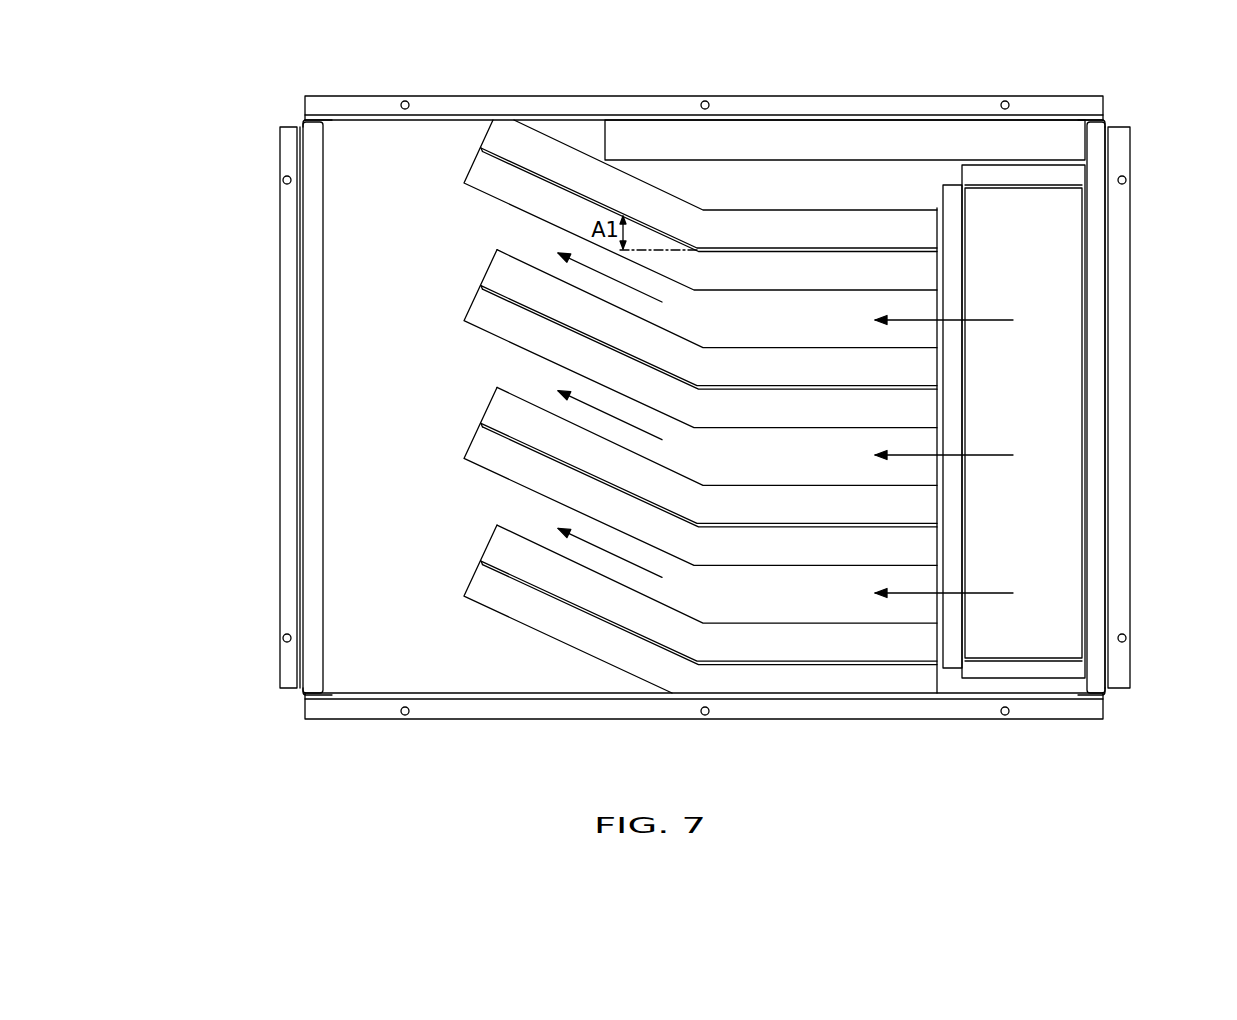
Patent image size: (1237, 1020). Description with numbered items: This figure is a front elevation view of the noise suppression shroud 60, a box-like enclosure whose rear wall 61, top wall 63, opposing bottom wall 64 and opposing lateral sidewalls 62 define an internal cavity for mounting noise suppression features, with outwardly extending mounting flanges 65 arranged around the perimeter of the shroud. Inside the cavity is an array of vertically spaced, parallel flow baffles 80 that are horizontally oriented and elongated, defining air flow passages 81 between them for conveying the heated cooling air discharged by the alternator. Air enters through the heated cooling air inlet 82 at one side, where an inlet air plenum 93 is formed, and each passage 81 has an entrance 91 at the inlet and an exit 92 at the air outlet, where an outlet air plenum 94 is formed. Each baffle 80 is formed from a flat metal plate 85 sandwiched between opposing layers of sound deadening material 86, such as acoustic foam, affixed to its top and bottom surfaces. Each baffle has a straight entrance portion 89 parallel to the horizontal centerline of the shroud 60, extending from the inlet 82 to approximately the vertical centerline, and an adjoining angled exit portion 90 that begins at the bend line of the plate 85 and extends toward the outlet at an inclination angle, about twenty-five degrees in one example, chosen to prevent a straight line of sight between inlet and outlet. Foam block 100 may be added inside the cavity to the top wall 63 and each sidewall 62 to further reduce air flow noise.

The noise suppression shroud 60 is at (262, 100).
The rear wall 61 is at (565, 670).
The lateral sidewalls 62 is at (312, 275).
The top wall 63 is at (434, 124).
The bottom wall 64 is at (485, 690).
The mounting flanges 65 is at (280, 228).
The flow baffles 80 is at (920, 192).
The air flow passages 81 is at (803, 458).
The heated cooling air inlet 82 is at (1078, 496).
The flat metal plate 85 is at (865, 245).
The sound deadening material 86 is at (797, 265).
The straight entrance portion 89 is at (566, 183).
The angled exit portion 90 is at (720, 245).
The entrance 91 is at (925, 305).
The exit 92 is at (503, 362).
The inlet air plenum 93 is at (1048, 374).
The outlet air plenum 94 is at (372, 522).
The foam block 100 is at (800, 142).